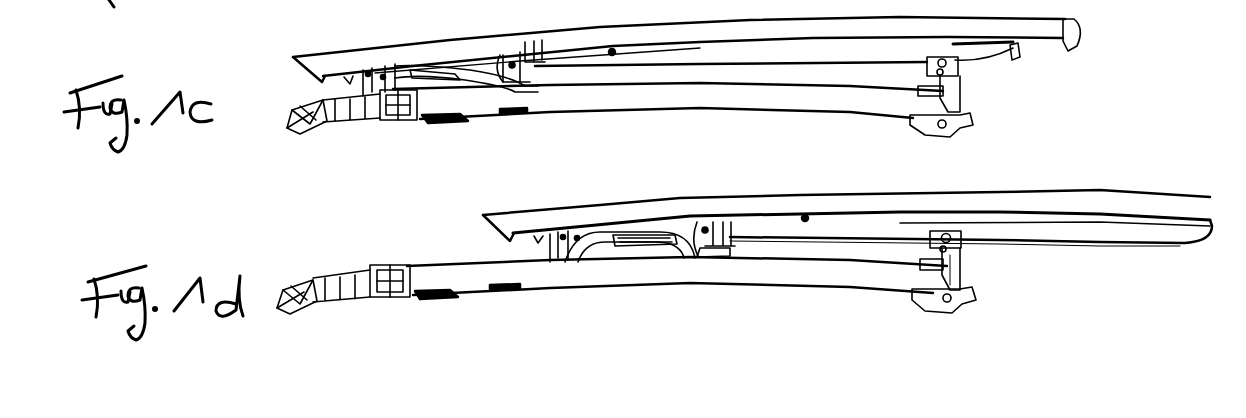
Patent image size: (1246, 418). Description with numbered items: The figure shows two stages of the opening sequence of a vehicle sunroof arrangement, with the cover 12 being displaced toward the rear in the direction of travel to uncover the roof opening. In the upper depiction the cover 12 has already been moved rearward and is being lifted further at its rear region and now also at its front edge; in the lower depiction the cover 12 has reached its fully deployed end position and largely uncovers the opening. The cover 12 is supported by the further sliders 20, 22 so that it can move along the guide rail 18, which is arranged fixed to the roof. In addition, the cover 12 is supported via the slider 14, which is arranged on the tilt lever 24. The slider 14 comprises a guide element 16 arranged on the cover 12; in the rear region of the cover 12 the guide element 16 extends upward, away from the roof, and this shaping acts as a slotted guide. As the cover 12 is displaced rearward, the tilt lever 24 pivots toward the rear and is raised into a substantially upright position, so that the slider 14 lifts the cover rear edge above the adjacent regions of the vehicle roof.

The cover 12 is at (1076, 200).
The slider 14 is at (958, 243).
The guide element 16 is at (1128, 243).
The guide rail 18 is at (788, 272).
The further slider 20 is at (698, 257).
The further slider 22 is at (560, 262).
The tilt lever 24 is at (945, 313).